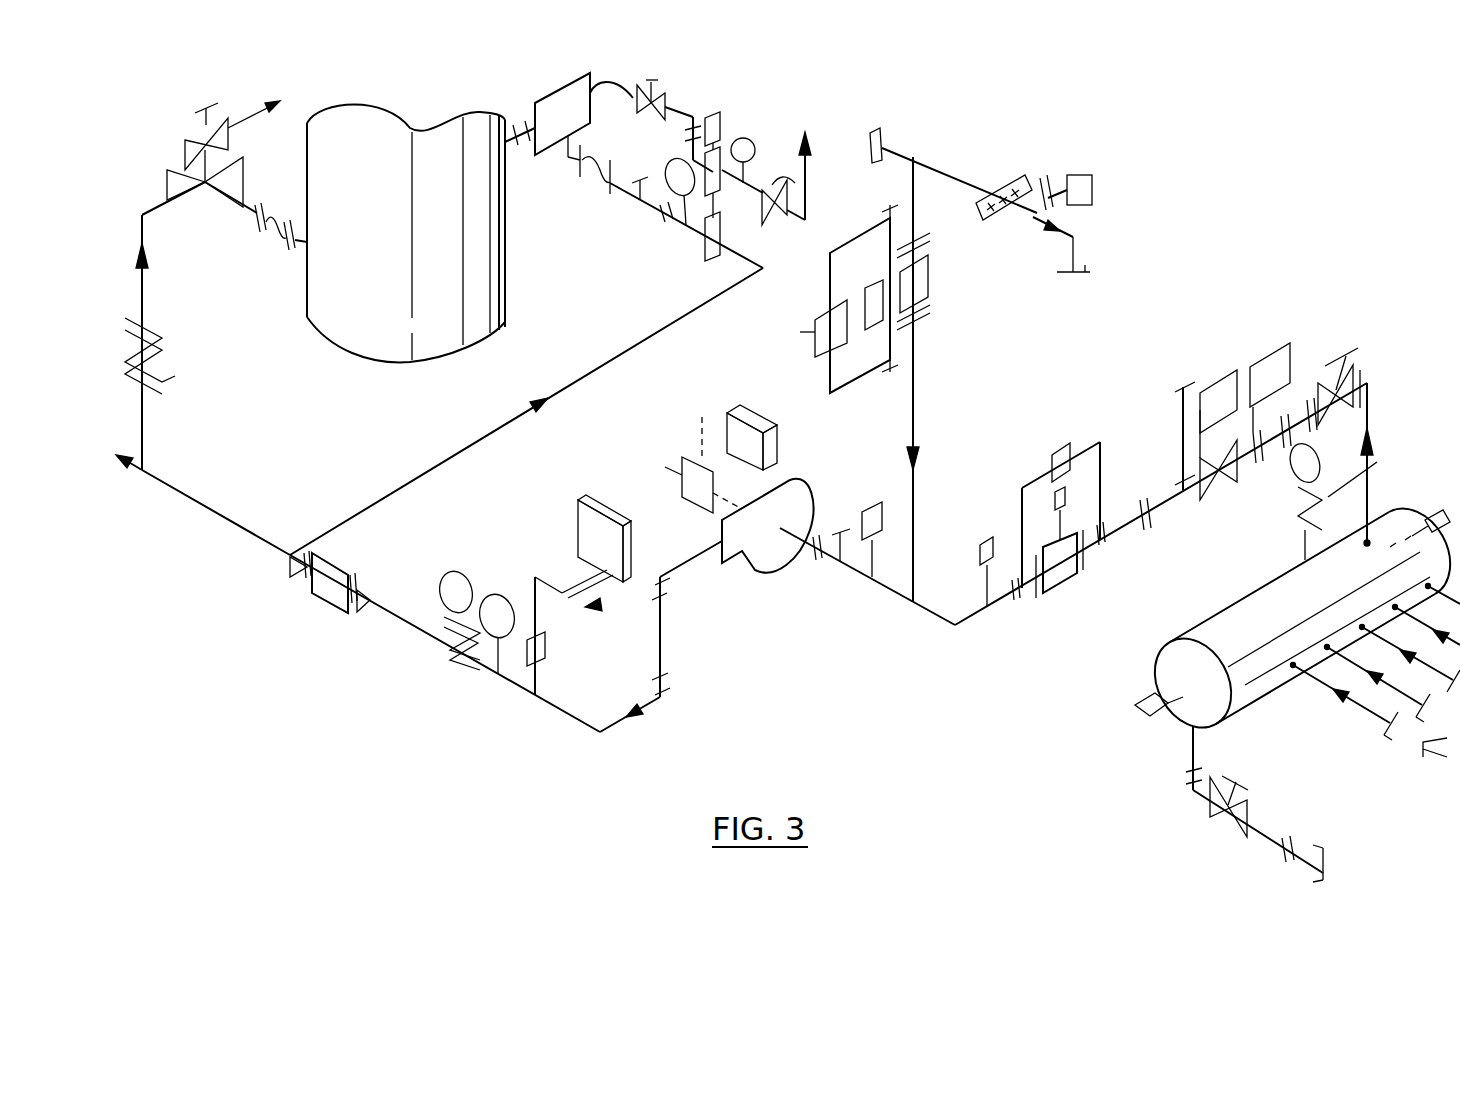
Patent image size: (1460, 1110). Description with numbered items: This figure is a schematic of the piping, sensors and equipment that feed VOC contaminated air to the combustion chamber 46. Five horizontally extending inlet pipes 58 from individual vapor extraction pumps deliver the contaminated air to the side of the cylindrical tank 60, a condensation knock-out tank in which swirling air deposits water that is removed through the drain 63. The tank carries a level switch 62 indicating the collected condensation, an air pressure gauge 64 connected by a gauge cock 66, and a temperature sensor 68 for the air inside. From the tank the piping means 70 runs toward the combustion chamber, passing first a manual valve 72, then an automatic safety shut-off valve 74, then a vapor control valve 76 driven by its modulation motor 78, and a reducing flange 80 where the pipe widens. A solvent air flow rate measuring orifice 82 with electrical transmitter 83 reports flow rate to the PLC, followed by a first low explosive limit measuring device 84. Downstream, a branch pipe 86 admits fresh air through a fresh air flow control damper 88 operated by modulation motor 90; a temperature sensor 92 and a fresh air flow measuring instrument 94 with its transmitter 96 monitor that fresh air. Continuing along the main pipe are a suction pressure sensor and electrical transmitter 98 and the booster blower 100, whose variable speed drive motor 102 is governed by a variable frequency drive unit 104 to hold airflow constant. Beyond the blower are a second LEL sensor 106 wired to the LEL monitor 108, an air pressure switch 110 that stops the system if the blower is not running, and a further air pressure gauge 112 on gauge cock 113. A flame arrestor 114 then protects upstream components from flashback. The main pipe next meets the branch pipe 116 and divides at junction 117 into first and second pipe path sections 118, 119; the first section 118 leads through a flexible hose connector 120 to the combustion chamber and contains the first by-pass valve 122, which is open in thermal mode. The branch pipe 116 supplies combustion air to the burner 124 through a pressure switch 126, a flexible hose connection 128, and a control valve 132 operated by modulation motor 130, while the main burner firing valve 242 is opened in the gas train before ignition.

The combustion chamber 46 is at (507, 278).
The inlet pipes 58 is at (1328, 688).
The cylindrical tank 60 is at (1205, 625).
The level switch 62 is at (1140, 700).
The drain 63 is at (1240, 822).
The air pressure gauge 64 is at (1318, 465).
The gauge cock 66 is at (1367, 475).
The temperature sensor 68 is at (1436, 516).
The piping means 70 is at (1369, 418).
The manual valve 72 is at (1340, 358).
The automatic safety shut-off valve 74 is at (1265, 343).
The vapor control valve 76 is at (1237, 484).
The modulation motor 78 is at (1212, 368).
The reducing flange 80 is at (1153, 522).
The solvent air flow rate measuring orifice 82 is at (1072, 580).
The electrical transmitter 83 is at (1055, 450).
The first low explosive limit measuring device 84 is at (982, 548).
The branch pipe 86 is at (917, 442).
The fresh air flow control damper 88 is at (1005, 180).
The modulation motor 90 is at (1083, 175).
The temperature sensor 92 is at (880, 130).
The fresh air flow measuring instrument 94 is at (932, 290).
The transmitter 96 is at (812, 330).
The suction pressure sensor and electrical transmitter 98 is at (872, 503).
The booster blower 100 is at (795, 483).
The motor 102 is at (680, 460).
The variable frequency drive unit 104 is at (768, 445).
The second LEL sensor 106 is at (532, 666).
The LEL monitor 108 is at (578, 525).
The air pressure switch 110 is at (596, 601).
The air pressure gauge 112 is at (452, 571).
The gauge cock 113 is at (445, 640).
The flame arrestor 114 is at (342, 553).
The branch pipe 116 is at (497, 425).
The junction 117 is at (146, 470).
The first pipe path section 118 is at (143, 424).
The second pipe path section 119 is at (130, 476).
The flexible hose connector 120 is at (283, 250).
The first by-pass valve 122 is at (163, 352).
The burner 124 is at (590, 118).
The pressure switch 126 is at (684, 210).
The flexible hose connection 128 is at (603, 195).
The modulation motor 130 is at (722, 130).
The control valve 132 is at (710, 258).
The main burner firing valve 242 is at (670, 95).